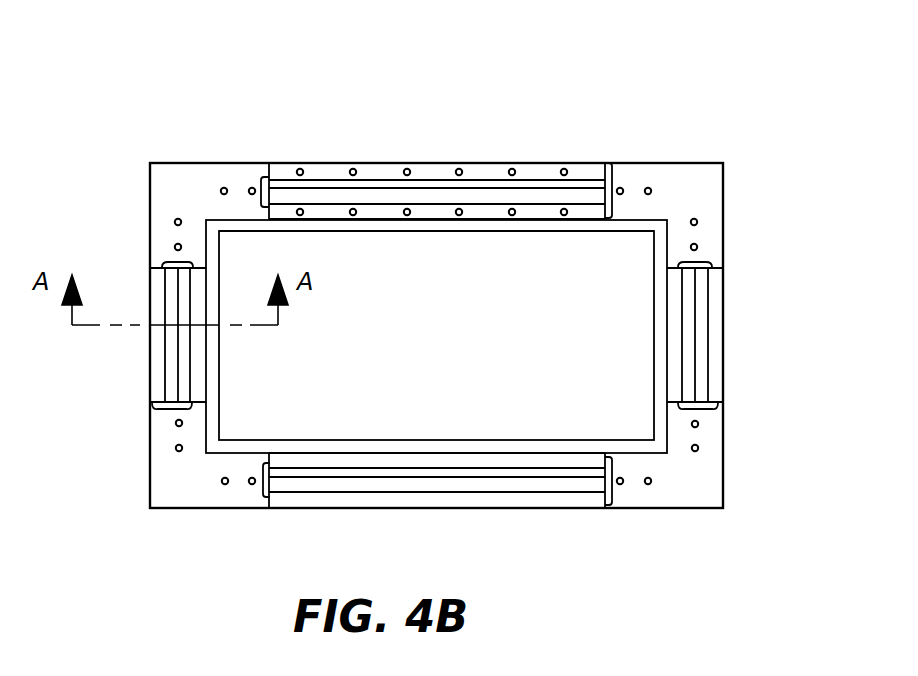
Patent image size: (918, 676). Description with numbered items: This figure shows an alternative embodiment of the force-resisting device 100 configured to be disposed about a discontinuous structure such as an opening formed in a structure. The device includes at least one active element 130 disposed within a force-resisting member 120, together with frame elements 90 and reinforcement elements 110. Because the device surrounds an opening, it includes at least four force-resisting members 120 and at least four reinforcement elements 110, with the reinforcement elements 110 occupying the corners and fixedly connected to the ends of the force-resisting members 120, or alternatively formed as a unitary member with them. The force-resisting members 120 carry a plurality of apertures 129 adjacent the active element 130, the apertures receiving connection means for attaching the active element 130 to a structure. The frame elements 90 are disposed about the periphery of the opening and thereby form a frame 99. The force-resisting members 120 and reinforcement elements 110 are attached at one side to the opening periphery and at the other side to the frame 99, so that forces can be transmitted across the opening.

The force-resisting device 100 is at (502, 134).
The reinforcement element 110 is at (168, 203).
The force-resisting member 120 is at (612, 180).
The apertures 129 is at (298, 168).
The active element 130 is at (266, 183).
The frame element 90 is at (208, 437).
The frame 99 is at (412, 231).